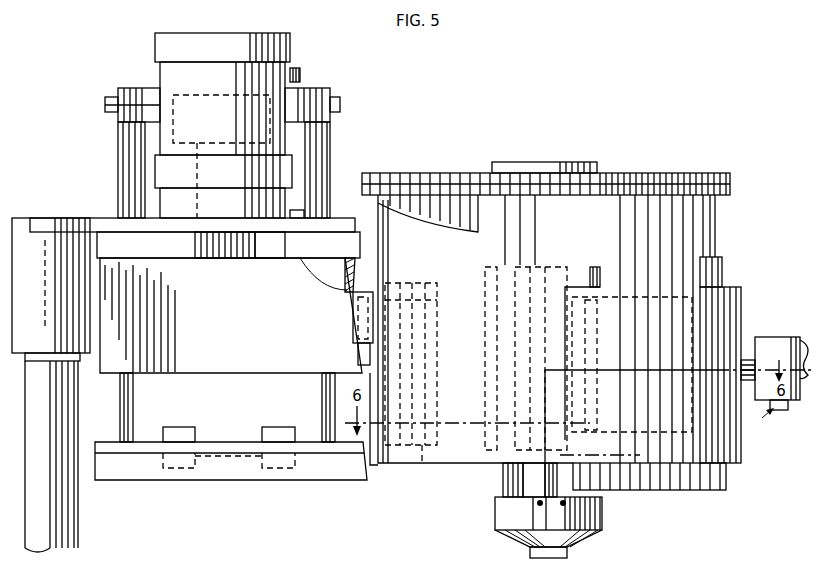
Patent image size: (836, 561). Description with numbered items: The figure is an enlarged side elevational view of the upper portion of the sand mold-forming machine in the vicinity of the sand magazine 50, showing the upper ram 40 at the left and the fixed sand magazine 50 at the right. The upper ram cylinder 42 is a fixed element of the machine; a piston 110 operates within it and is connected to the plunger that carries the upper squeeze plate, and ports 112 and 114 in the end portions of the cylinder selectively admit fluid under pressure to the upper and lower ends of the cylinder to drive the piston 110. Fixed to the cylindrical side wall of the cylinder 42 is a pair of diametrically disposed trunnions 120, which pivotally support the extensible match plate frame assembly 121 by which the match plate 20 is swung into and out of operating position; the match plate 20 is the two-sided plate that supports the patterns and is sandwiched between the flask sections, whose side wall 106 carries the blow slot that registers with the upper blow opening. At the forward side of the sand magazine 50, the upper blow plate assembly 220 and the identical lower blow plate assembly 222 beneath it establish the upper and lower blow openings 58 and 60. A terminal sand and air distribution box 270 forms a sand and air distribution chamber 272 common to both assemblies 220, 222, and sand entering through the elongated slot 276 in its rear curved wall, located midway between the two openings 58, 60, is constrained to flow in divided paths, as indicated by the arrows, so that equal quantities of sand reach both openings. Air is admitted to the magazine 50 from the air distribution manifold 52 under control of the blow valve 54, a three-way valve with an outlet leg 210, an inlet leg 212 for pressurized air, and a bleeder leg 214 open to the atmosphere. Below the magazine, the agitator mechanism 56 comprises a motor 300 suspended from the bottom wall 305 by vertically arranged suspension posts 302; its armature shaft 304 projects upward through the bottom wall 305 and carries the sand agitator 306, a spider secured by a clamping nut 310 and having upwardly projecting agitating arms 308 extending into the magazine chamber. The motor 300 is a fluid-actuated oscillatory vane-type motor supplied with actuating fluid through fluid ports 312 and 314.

The match plate 20 is at (232, 477).
The upper ram 40 is at (213, 84).
The upper ram cylinder 42 is at (293, 100).
The sand magazine 50 is at (536, 226).
The air distribution manifold 52 is at (654, 357).
The blow valve 54 is at (766, 355).
The agitator mechanism 56 is at (540, 530).
The upper blow opening 58 is at (366, 316).
The lower blow opening 60 is at (381, 433).
The side wall 106 is at (350, 262).
The piston 110 is at (190, 95).
The port 112 is at (300, 75).
The port 114 is at (304, 214).
The trunnions 120 is at (105, 105).
The extensible match plate frame assembly 121 is at (333, 163).
The outlet leg 210 is at (753, 350).
The inlet leg 212 is at (804, 340).
The bleeder leg 214 is at (778, 434).
The upper blow plate assembly 220 is at (350, 338).
The lower blow plate assembly 222 is at (356, 413).
The sand and air distribution box 270 is at (414, 320).
The sand and air distribution chamber 272 is at (423, 468).
The slot 276 is at (402, 404).
The motor 300 is at (512, 527).
The suspension posts 302 is at (506, 475).
The armature shaft 304 is at (530, 480).
The bottom wall 305 is at (467, 412).
The sand agitator 306 is at (594, 354).
The agitating arms 308 is at (592, 270).
The clamping nut 310 is at (531, 418).
The fluid port 312 is at (538, 504).
The fluid port 314 is at (566, 504).